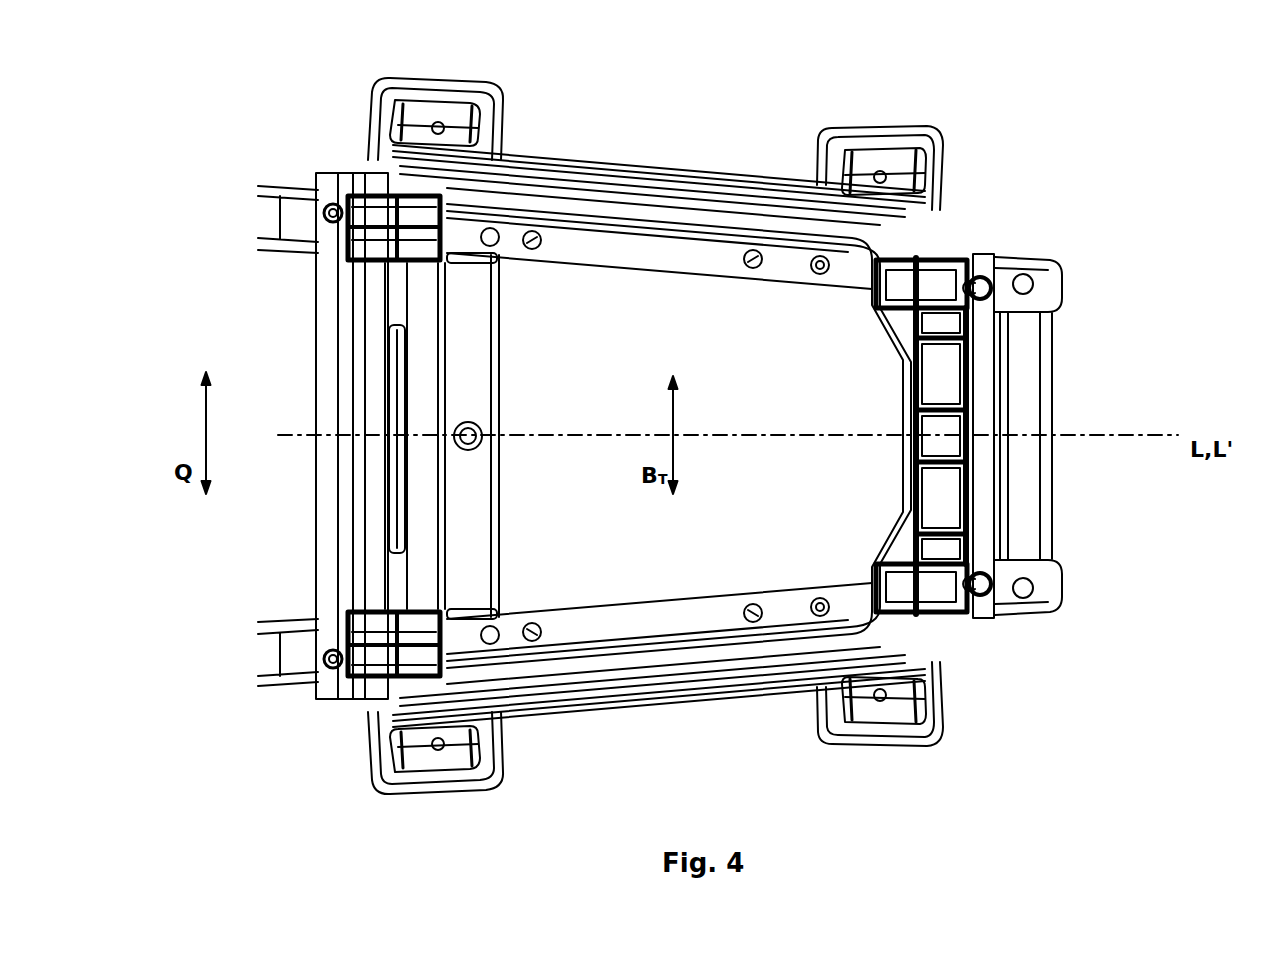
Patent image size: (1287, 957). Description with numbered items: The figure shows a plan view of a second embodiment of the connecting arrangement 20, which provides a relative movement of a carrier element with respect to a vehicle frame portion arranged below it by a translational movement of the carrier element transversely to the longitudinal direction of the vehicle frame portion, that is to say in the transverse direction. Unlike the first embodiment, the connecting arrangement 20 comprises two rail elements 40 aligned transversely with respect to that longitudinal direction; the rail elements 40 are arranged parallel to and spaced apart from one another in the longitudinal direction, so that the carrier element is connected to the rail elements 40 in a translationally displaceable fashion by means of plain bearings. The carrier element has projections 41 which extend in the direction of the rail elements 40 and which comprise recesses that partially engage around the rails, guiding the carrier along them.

The connecting arrangement 20 is at (995, 100).
The rail elements 40 is at (997, 235).
The projections 41 is at (359, 202).